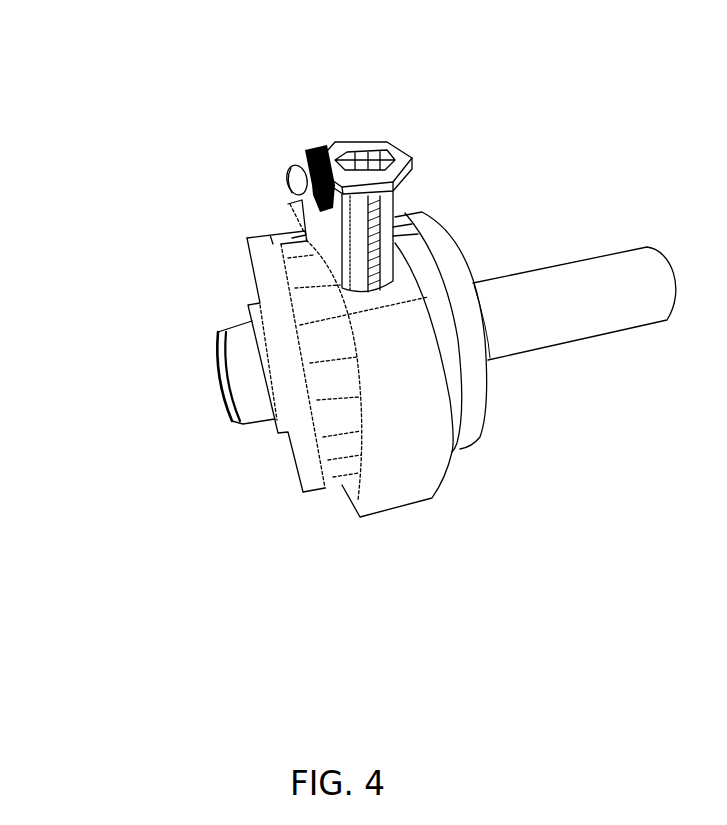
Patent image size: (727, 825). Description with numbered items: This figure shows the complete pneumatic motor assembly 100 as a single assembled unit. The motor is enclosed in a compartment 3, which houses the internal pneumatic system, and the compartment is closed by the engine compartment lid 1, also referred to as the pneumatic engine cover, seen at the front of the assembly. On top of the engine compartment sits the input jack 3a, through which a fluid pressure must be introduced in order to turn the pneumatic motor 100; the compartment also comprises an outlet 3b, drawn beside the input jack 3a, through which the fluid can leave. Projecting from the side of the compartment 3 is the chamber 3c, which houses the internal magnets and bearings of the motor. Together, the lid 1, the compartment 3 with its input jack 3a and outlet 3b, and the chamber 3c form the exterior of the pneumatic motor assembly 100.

The pneumatic motor 100 is at (200, 393).
The engine compartment lid 1 is at (248, 286).
The compartment 3 is at (452, 474).
The input jack 3a is at (393, 173).
The outlet 3b is at (307, 150).
The chamber 3c is at (536, 269).